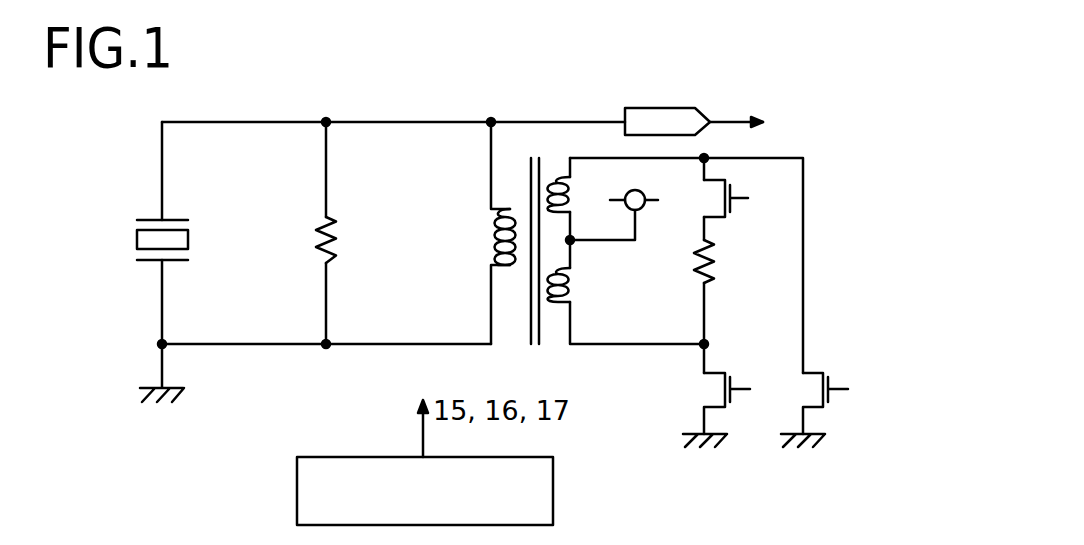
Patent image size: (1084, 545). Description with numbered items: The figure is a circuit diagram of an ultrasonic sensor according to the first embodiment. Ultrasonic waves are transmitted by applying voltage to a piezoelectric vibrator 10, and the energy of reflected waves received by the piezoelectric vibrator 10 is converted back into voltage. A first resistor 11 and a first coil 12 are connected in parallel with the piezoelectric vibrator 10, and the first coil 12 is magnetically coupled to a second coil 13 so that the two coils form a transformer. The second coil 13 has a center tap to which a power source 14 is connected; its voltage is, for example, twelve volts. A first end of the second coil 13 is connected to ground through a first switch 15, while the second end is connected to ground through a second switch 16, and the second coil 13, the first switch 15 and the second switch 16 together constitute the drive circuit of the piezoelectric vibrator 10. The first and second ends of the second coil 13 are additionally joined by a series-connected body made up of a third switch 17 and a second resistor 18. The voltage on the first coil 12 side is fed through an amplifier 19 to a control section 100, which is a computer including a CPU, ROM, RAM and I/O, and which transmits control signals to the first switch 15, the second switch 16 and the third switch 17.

The piezoelectric vibrator 10 is at (148, 218).
The first resistor 11 is at (338, 232).
The first coil 12 is at (500, 208).
The second coil 13 is at (560, 174).
The power source 14 is at (645, 195).
The first switch 15 is at (736, 385).
The second switch 16 is at (836, 385).
The third switch 17 is at (737, 193).
The second resistor 18 is at (713, 252).
The amplifier 19 is at (680, 108).
The control section 100 is at (553, 502).